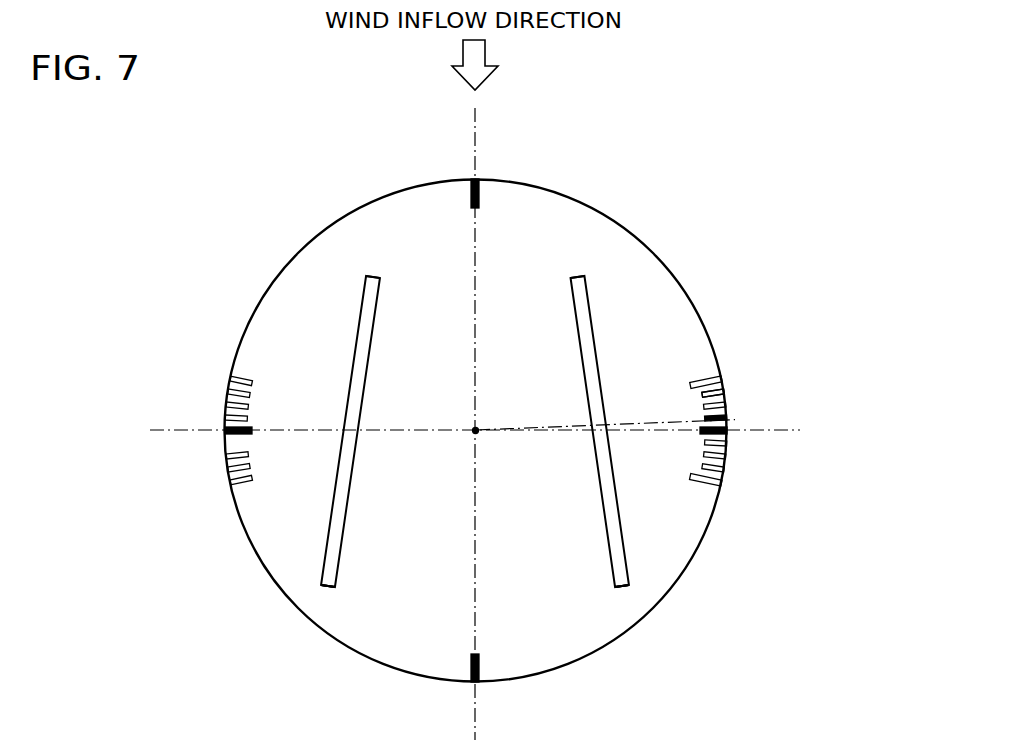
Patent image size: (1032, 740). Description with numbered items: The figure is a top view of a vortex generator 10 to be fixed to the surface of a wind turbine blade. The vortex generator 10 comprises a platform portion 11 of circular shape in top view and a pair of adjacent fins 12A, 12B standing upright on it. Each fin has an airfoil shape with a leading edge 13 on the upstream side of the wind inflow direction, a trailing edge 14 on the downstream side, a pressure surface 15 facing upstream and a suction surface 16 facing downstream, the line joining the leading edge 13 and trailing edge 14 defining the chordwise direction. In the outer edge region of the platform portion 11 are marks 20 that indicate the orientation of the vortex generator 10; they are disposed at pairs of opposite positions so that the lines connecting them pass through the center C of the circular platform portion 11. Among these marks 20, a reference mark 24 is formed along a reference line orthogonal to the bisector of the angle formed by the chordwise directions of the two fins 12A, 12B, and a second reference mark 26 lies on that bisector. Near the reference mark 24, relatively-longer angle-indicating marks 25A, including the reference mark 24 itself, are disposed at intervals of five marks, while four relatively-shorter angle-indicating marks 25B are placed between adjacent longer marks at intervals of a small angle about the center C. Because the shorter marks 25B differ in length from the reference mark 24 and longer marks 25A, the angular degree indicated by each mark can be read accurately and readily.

The vortex generator 10 is at (691, 189).
The platform portion 11 is at (566, 200).
The fin 12A is at (362, 318).
The fin 12B is at (590, 318).
The leading edge 13 is at (372, 277).
The trailing edge 14 is at (330, 590).
The pressure surface 15 is at (322, 540).
The suction surface 16 is at (322, 540).
The marks 20 is at (475, 432).
The reference mark 24 is at (226, 412).
The relatively-longer angle-indicating marks 25A is at (725, 376).
The relatively-shorter angle-indicating marks 25B is at (727, 406).
The reference mark 26 is at (470, 197).
The center C is at (477, 432).